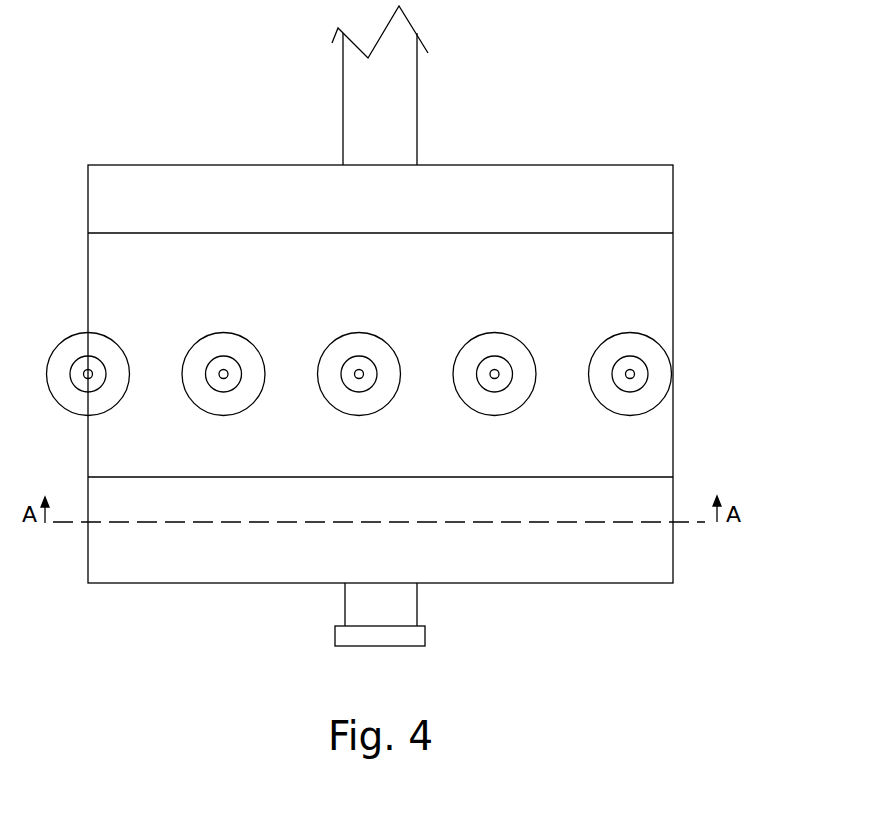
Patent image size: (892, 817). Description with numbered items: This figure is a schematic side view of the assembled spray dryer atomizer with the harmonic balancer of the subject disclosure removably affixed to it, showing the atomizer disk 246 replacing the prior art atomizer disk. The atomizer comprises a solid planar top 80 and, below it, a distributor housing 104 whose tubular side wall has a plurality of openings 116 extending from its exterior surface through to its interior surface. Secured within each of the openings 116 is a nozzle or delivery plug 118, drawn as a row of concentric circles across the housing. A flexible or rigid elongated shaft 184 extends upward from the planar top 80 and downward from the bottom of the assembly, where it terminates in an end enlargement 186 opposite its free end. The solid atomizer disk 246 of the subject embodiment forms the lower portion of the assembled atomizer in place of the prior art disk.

The planar top 80 is at (658, 196).
The distributor housing 104 is at (658, 438).
The openings 116 is at (493, 332).
The nozzle or delivery plug 118 is at (658, 373).
The elongated shaft 184 is at (401, 97).
The end enlargement 186 is at (402, 634).
The atomizer disk 246 is at (673, 565).